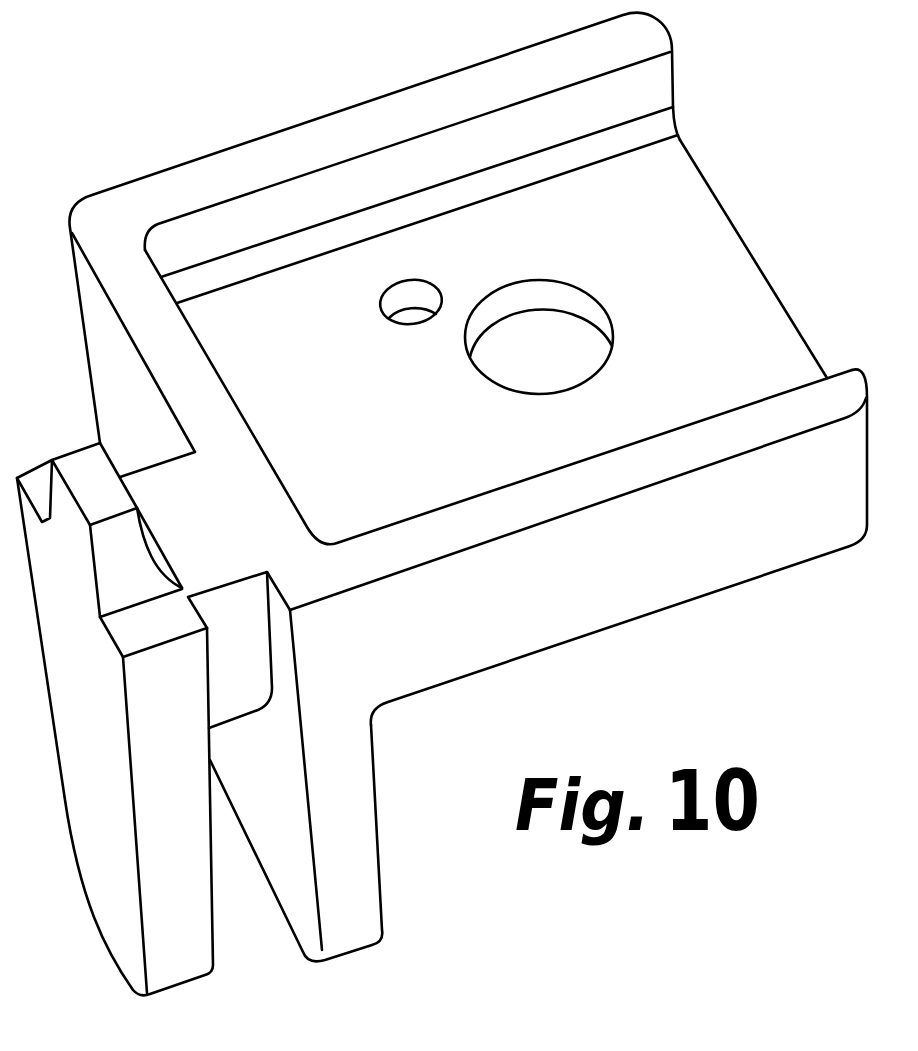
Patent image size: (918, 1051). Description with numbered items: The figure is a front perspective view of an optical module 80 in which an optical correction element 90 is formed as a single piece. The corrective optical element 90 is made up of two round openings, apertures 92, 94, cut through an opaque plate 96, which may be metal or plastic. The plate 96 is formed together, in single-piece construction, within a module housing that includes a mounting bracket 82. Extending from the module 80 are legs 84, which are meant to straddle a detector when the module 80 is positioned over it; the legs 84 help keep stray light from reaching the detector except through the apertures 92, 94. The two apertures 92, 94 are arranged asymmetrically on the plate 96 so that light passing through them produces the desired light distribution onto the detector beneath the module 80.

The optical module 80 is at (448, 504).
The mounting bracket 82 is at (112, 908).
The legs 84 is at (647, 75).
The optical correction element 90 is at (462, 339).
The aperture 92 is at (573, 302).
The aperture 94 is at (428, 298).
The opaque plate 96 is at (742, 357).